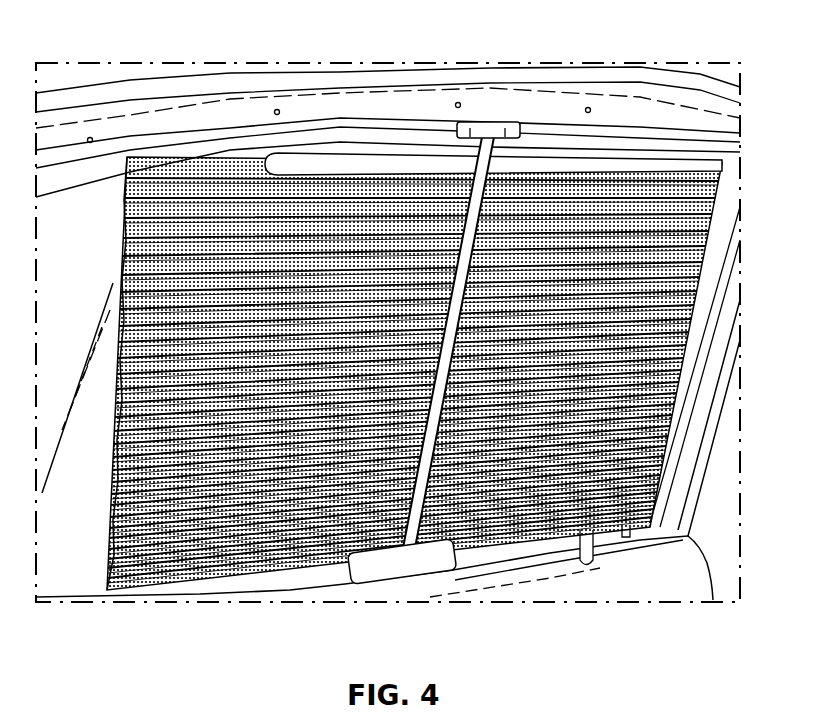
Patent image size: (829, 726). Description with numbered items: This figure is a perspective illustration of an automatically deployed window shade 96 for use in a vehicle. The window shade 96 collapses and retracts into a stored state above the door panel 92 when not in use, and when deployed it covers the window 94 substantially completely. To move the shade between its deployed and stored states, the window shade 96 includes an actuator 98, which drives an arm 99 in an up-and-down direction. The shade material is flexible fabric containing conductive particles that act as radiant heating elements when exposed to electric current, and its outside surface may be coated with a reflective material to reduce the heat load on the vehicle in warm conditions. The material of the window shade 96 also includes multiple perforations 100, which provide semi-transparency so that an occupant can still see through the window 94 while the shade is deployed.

The door panel 92 is at (657, 587).
The window 94 is at (684, 158).
The window shade 96 is at (243, 232).
The actuator 98 is at (432, 558).
The arm 99 is at (420, 455).
The perforations 100 is at (122, 243).